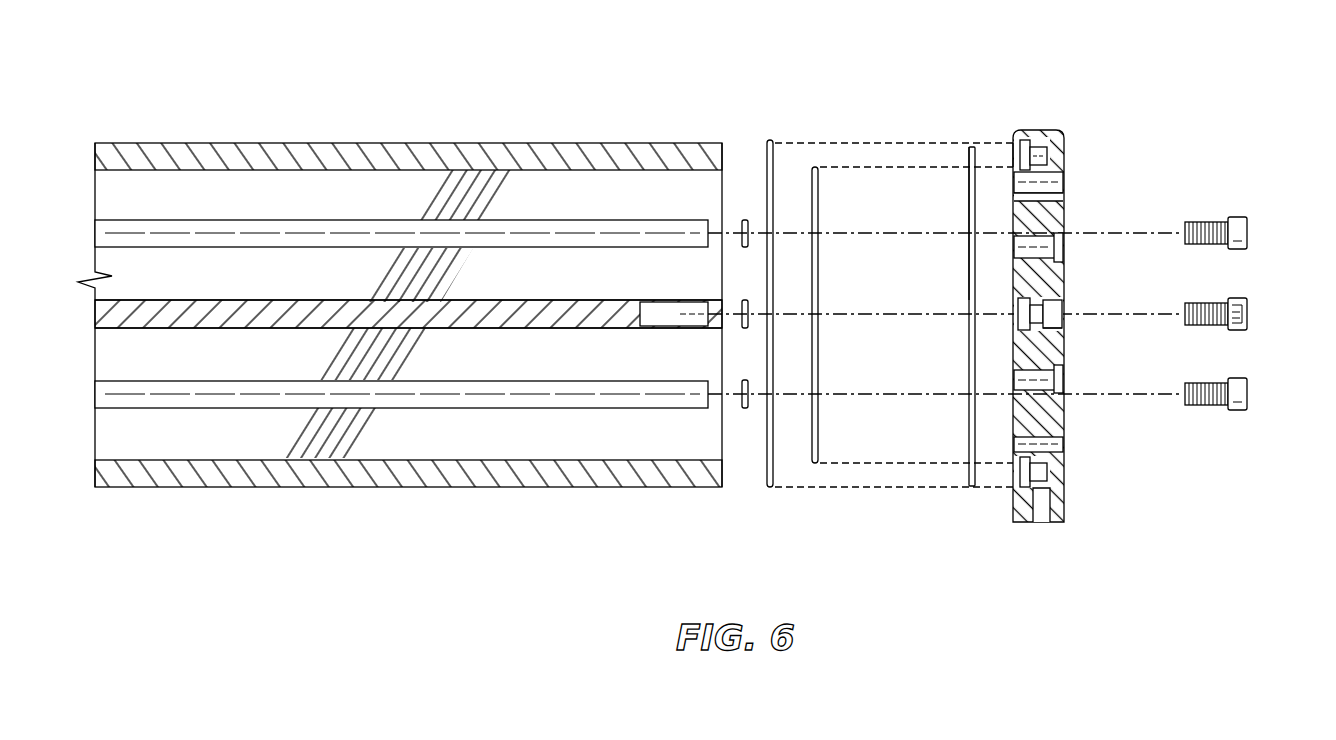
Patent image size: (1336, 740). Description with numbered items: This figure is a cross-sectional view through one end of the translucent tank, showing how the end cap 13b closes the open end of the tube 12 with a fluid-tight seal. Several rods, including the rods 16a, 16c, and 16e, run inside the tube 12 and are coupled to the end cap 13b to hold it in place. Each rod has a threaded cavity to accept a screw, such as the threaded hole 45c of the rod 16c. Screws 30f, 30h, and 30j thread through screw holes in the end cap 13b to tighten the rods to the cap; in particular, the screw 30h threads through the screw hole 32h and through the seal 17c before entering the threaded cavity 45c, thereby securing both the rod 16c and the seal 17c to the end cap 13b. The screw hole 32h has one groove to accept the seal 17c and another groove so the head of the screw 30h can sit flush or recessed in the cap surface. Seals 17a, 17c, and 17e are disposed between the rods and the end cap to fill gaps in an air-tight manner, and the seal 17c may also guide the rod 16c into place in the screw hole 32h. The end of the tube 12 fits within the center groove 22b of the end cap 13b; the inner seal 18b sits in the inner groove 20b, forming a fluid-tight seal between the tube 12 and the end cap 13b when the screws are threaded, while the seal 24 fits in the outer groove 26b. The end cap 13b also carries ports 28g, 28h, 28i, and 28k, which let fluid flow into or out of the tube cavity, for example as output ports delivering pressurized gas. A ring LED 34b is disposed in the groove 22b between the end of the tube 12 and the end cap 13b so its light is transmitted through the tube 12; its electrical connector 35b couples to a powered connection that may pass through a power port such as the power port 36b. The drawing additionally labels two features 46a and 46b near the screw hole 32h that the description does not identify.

The tube 12 is at (298, 488).
The end cap 13b is at (1058, 124).
The rod 16a is at (263, 226).
The rod 16c is at (485, 322).
The rod 16e is at (425, 402).
The seal 17a is at (738, 228).
The seal 17c is at (738, 304).
The seal 17e is at (738, 406).
The inner seal 18b is at (818, 413).
The inner groove 20b is at (1030, 188).
The center groove 22b is at (1002, 167).
The outer seal 24 is at (768, 484).
The outer groove 26b is at (1026, 140).
The port 28g is at (1068, 178).
The port 28h is at (1068, 258).
The port 28i is at (1068, 451).
The port 28k is at (1068, 384).
The screw 30f is at (1250, 233).
The screw 30h is at (1250, 313).
The screw 30j is at (1250, 394).
The screw hole 32h is at (1068, 327).
The LED 34b is at (969, 282).
The electrical connector 35b is at (970, 478).
The power port 36b is at (1042, 508).
The threaded hole 45c is at (634, 313).
The pin 46a is at (1020, 322).
The bushing 46b is at (1062, 306).